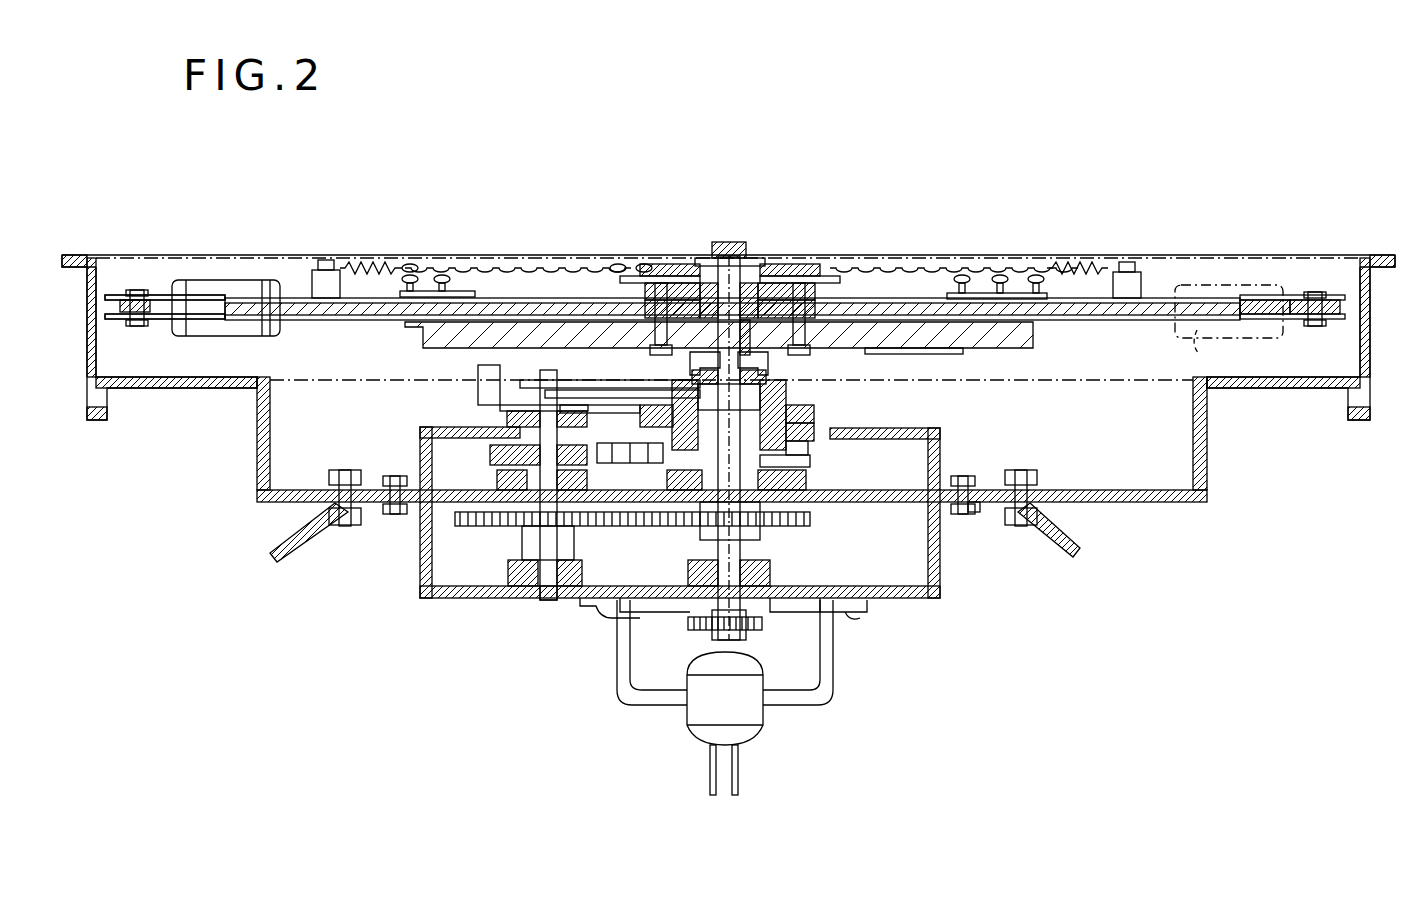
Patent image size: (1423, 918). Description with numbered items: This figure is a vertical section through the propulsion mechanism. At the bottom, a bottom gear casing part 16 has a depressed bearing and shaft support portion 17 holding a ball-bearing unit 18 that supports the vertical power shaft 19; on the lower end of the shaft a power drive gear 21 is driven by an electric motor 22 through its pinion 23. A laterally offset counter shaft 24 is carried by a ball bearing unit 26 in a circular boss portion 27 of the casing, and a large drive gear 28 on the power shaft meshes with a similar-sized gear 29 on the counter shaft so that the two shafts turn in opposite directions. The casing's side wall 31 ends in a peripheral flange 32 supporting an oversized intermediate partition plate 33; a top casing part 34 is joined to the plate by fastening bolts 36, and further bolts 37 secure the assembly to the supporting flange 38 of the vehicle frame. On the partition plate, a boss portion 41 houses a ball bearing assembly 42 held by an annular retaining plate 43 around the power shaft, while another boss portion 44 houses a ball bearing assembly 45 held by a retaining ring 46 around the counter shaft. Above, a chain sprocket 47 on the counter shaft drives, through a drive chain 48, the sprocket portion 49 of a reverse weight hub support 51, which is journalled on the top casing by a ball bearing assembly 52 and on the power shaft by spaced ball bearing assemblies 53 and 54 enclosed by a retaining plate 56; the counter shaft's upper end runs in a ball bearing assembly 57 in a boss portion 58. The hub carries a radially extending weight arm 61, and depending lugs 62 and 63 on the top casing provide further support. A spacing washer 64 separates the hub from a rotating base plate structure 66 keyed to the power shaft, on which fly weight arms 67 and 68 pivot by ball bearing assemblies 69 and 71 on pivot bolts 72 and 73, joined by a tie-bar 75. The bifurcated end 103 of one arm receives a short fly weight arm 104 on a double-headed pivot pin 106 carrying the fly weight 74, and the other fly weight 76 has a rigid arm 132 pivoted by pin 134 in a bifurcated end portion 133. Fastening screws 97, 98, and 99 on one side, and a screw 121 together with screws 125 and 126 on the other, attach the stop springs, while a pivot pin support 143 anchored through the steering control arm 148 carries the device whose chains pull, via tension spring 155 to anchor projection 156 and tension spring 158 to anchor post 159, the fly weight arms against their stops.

The bottom gear casing part 16 is at (488, 598).
The bearing and shaft support portion 17 is at (770, 598).
The ball-bearing unit 18 is at (745, 562).
The power shaft 19 is at (718, 548).
The power drive gear 21 is at (690, 625).
The electric motor 22 is at (752, 718).
The pinion 23 is at (742, 632).
The counter shaft 24 is at (540, 605).
The ball bearing unit 26 is at (512, 560).
The circular boss portion 27 is at (507, 570).
The drive gear 28 is at (812, 520).
The gear 29 is at (455, 520).
The side wall 31 is at (425, 572).
The peripheral flange 32 is at (980, 518).
The intermediate partition plate 33 is at (912, 505).
The top casing part 34 is at (258, 452).
The fastening bolts 36 is at (394, 482).
The bolts 37 is at (344, 470).
The supporting flange 38 is at (322, 505).
The circular boss portion 41 is at (790, 480).
The ball bearing assembly 42 is at (675, 480).
The annular retaining plate 43 is at (810, 462).
The circular boss portion 44 is at (497, 485).
The ball bearing assembly 45 is at (500, 470).
The annular retaining ring 46 is at (592, 468).
The chain sprocket 47 is at (510, 435).
The drive chain 48 is at (618, 440).
The sprocket portion 49 is at (808, 450).
The reverse weight hub support 51 is at (786, 402).
The ball bearing assembly 52 is at (814, 414).
The ball bearing assembly 53 is at (810, 433).
The ball bearing assembly 54 is at (690, 362).
The retaining plate 56 is at (768, 375).
The ball bearing assembly 57 is at (535, 405).
The boss portion 58 is at (478, 385).
The weight arm 61 is at (595, 378).
The depending lug 62 is at (92, 420).
The depending lug 63 is at (1352, 420).
The spacing washer 64 is at (768, 362).
The base plate structure 66 is at (1025, 345).
The fly weight arm 67 is at (1110, 318).
The fly weight arm 68 is at (328, 318).
The ball bearing assembly 69 is at (820, 300).
The ball bearing assembly 71 is at (655, 300).
The pivot bolt 72 is at (845, 305).
The pivot bolt 73 is at (700, 305).
The fly weight 74 is at (1229, 330).
The tie-bar 75 is at (670, 290).
The fly weight 76 is at (208, 330).
The fastening screw 97 is at (1000, 275).
The fastening screw 98 is at (962, 275).
The fastening screw 99 is at (1040, 275).
The bifurcated end 103 is at (1290, 298).
The short fly weight arm 104 is at (1338, 312).
The double-headed pivot pin 106 is at (1316, 295).
The pin 121 is at (442, 275).
The screw 125 is at (410, 275).
The screw 126 is at (462, 272).
The rigid arm 132 is at (150, 305).
The bifurcated end portion 133 is at (165, 318).
The double headed pivot pin 134 is at (136, 290).
The pivot pin support 143 is at (722, 242).
The steering control arm 148 is at (752, 258).
The tension spring 155 is at (1105, 270).
The anchor projection 156 is at (1133, 285).
The tension spring 158 is at (362, 265).
The anchor post 159 is at (318, 285).